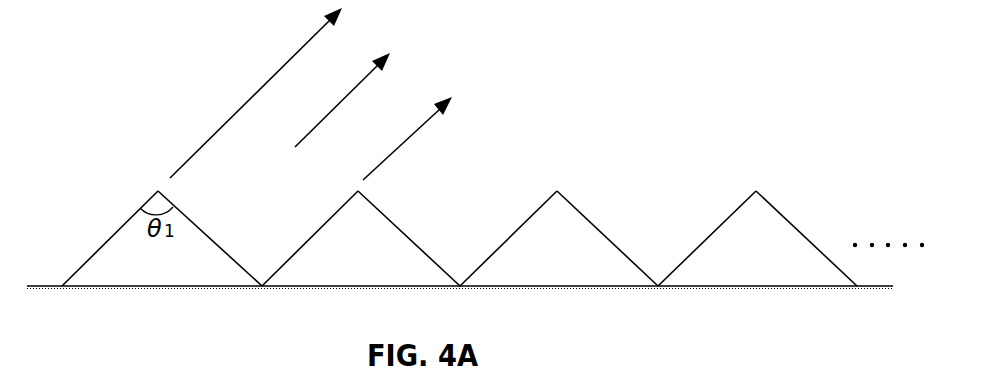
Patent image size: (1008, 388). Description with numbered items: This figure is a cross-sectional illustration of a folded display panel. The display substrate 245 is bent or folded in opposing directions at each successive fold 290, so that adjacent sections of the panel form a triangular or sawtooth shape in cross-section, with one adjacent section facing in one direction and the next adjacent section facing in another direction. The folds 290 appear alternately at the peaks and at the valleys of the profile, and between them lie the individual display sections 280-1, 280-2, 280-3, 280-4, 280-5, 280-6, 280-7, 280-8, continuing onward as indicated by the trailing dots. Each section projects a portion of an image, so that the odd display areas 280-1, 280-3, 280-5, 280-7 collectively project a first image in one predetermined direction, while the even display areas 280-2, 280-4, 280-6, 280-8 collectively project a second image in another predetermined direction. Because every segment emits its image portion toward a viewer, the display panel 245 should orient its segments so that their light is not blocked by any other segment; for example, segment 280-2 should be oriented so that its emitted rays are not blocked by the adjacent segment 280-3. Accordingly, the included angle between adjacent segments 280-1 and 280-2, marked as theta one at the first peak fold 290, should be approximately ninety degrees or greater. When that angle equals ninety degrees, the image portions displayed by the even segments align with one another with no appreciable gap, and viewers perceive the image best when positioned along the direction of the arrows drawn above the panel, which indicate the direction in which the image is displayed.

The display substrate 245 is at (123, 222).
The display section 280-1 is at (112, 236).
The display section 280-2 is at (180, 211).
The display section 280-3 is at (312, 237).
The display section 280-4 is at (380, 211).
The display section 280-5 is at (512, 236).
The display section 280-6 is at (578, 211).
The display section 280-7 is at (710, 236).
The display section 280-8 is at (778, 211).
The fold 290 is at (158, 191).